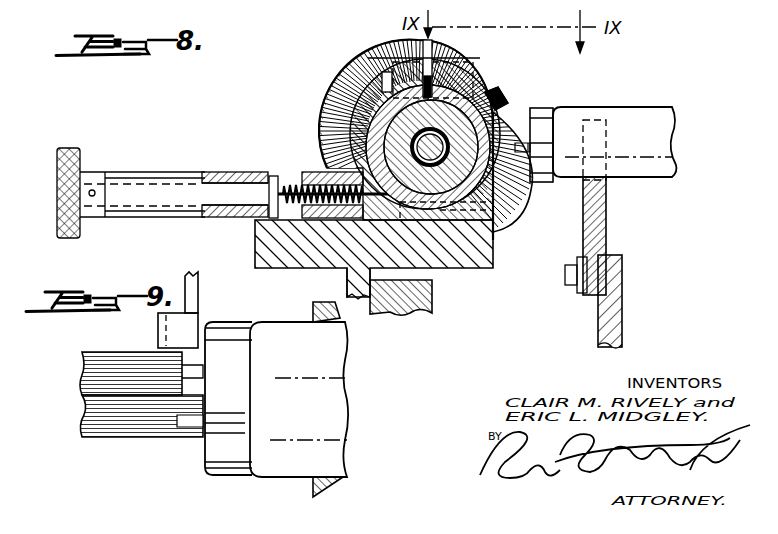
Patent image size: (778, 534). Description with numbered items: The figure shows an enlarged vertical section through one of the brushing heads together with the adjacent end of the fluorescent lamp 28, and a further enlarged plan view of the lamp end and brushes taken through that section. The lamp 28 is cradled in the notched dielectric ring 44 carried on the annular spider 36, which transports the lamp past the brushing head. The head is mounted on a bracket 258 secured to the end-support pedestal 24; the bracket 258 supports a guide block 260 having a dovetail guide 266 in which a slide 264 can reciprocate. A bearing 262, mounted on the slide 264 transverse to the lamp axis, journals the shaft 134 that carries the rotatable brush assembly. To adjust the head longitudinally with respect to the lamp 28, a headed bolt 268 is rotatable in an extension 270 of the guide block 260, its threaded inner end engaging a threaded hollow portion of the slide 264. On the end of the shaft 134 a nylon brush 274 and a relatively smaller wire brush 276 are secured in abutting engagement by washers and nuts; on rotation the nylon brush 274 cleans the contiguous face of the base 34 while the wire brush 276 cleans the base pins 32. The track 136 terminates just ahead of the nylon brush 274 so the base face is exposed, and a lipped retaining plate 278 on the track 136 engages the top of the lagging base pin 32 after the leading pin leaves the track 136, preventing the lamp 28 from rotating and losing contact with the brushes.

In FIG. 8, the end-support pedestal 24 is at (433, 303).
In FIG. 8, the based fluorescent lamp 28 is at (632, 113).
In FIG. 9, the based fluorescent lamp 28 is at (330, 367).
In FIG. 8, the base pin 32 is at (545, 150).
In FIG. 9, the base pin 32 is at (205, 422).
In FIG. 8, the base 34 is at (540, 116).
In FIG. 9, the base 34 is at (233, 333).
In FIG. 8, the annular spider 36 is at (624, 313).
In FIG. 8, the ring 44 is at (606, 219).
In FIG. 9, the ring 44 is at (340, 316).
In FIG. 8, the shaft 134 is at (405, 140).
In FIG. 9, the track 136 is at (198, 293).
In FIG. 8, the bracket 258 is at (348, 276).
In FIG. 8, the guide block 260 is at (262, 243).
In FIG. 8, the bearing 262 is at (358, 104).
In FIG. 8, the slide 264 is at (334, 154).
In FIG. 8, the dovetail guide 266 is at (482, 239).
In FIG. 8, the headed bolt 268 is at (219, 172).
In FIG. 8, the extension 270 is at (268, 172).
In FIG. 8, the nylon brush 274 is at (378, 73).
In FIG. 9, the nylon brush 274 is at (84, 427).
In FIG. 8, the wire brush 276 is at (522, 86).
In FIG. 9, the wire brush 276 is at (82, 370).
In FIG. 9, the lipped retaining plate 278 is at (158, 330).